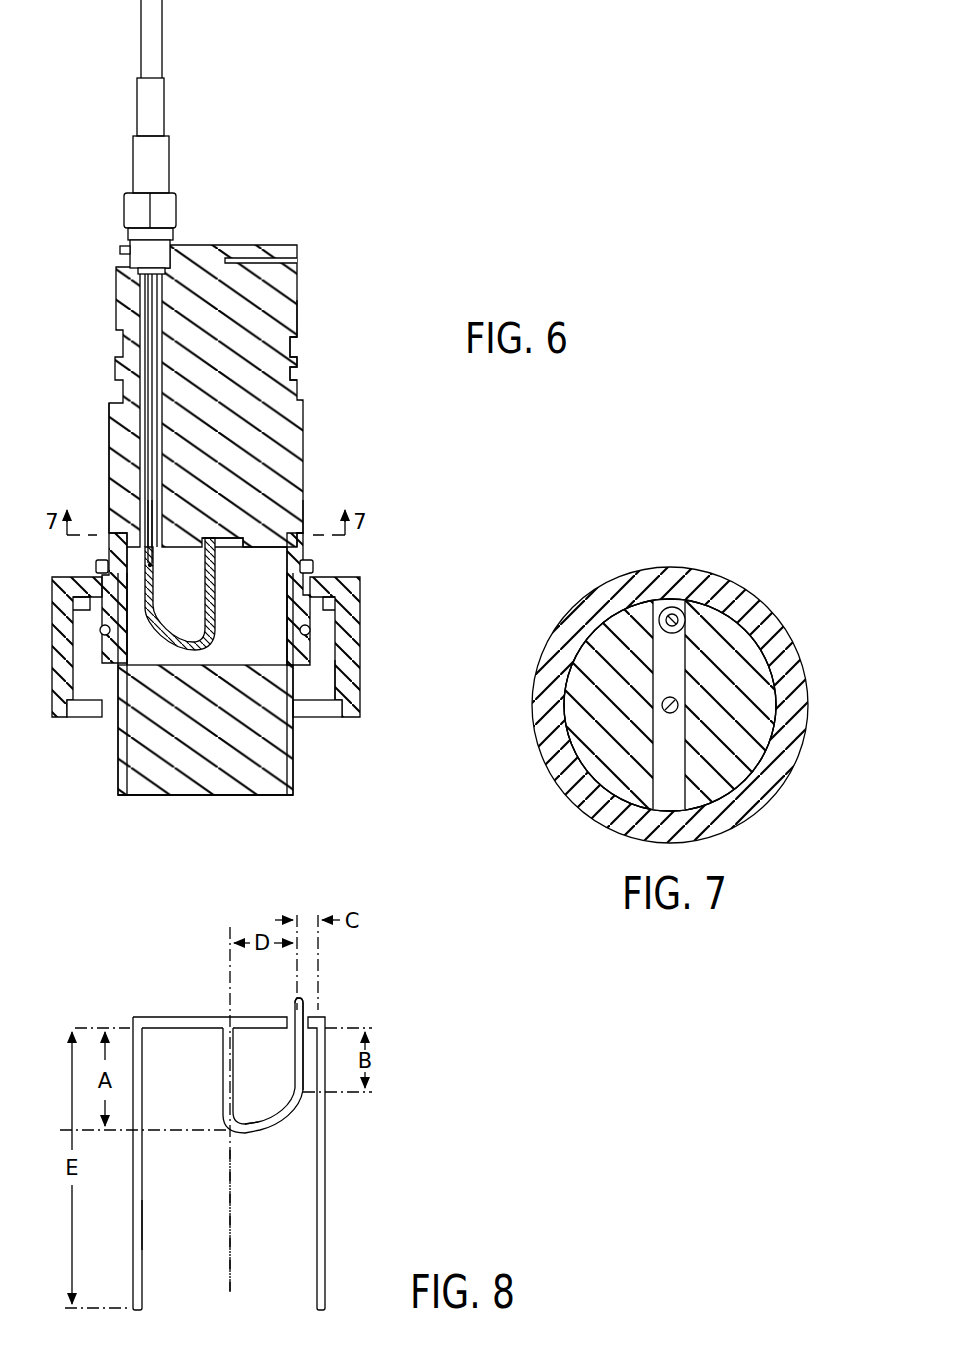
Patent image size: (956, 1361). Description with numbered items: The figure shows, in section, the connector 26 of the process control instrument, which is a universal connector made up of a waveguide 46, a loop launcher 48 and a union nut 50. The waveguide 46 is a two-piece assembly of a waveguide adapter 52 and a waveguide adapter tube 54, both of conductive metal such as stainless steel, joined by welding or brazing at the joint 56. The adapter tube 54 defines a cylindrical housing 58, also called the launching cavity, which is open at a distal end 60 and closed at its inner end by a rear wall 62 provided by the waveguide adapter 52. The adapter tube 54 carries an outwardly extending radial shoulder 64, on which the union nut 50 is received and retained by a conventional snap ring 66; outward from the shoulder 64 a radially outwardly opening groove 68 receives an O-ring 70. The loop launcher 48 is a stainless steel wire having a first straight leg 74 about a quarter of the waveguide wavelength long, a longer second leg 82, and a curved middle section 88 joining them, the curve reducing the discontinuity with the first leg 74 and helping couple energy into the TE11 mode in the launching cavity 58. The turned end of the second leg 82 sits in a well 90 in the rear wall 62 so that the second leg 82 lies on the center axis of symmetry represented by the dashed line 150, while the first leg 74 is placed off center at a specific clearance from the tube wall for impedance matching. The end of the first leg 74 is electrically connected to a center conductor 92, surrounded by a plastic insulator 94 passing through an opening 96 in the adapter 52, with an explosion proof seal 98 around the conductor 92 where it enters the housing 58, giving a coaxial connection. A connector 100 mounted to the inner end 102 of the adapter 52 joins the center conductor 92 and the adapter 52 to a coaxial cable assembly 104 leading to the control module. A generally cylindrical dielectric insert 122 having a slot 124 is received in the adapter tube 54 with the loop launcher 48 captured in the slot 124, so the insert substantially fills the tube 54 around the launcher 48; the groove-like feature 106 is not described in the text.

In FIG. 6, the connector 26 is at (94, 456).
In FIG. 6, the waveguide 46 is at (319, 431).
In FIG. 6, the loop launcher 48 is at (149, 631).
In FIG. 7, the loop launcher 48 is at (665, 698).
In FIG. 8, the loop launcher 48 is at (262, 1142).
In FIG. 6, the union nut 50 is at (364, 697).
In FIG. 6, the waveguide adapter 52 is at (271, 394).
In FIG. 6, the waveguide adapter tube 54 is at (116, 775).
In FIG. 7, the waveguide adapter tube 54 is at (742, 596).
In FIG. 8, the waveguide adapter tube 54 is at (327, 1195).
In FIG. 6, the weld or braze joint 56 is at (304, 527).
In FIG. 6, the cylindrical housing 58 is at (238, 652).
In FIG. 8, the cylindrical housing 58 is at (170, 1213).
In FIG. 6, the distal end 60 is at (121, 796).
In FIG. 6, the rear wall 62 is at (252, 549).
In FIG. 6, the radial shoulder 64 is at (336, 607).
In FIG. 6, the snap ring 66 is at (320, 565).
In FIG. 6, the groove 68 is at (340, 688).
In FIG. 6, the O-ring 70 is at (312, 631).
In FIG. 8, the first straight leg 74 is at (293, 1072).
In FIG. 8, the second leg 82 is at (222, 1072).
In FIG. 8, the curved middle section 88 is at (270, 1115).
In FIG. 6, the well 90 is at (237, 540).
In FIG. 6, the center conductor 92 is at (146, 444).
In FIG. 6, the plastic insulator 94 is at (139, 312).
In FIG. 6, the opening 96 is at (124, 360).
In FIG. 6, the explosion proof seal 98 is at (146, 512).
In FIG. 6, the connector 100 is at (134, 252).
In FIG. 6, the inner end 102 is at (222, 249).
In FIG. 6, the coaxial cable assembly 104 is at (162, 212).
In FIG. 6, the groove 106 is at (301, 345).
In FIG. 6, the dielectric insert 122 is at (218, 797).
In FIG. 7, the dielectric insert 122 is at (747, 668).
In FIG. 7, the slot 124 is at (683, 777).
In FIG. 8, the dashed line 150 is at (228, 1250).